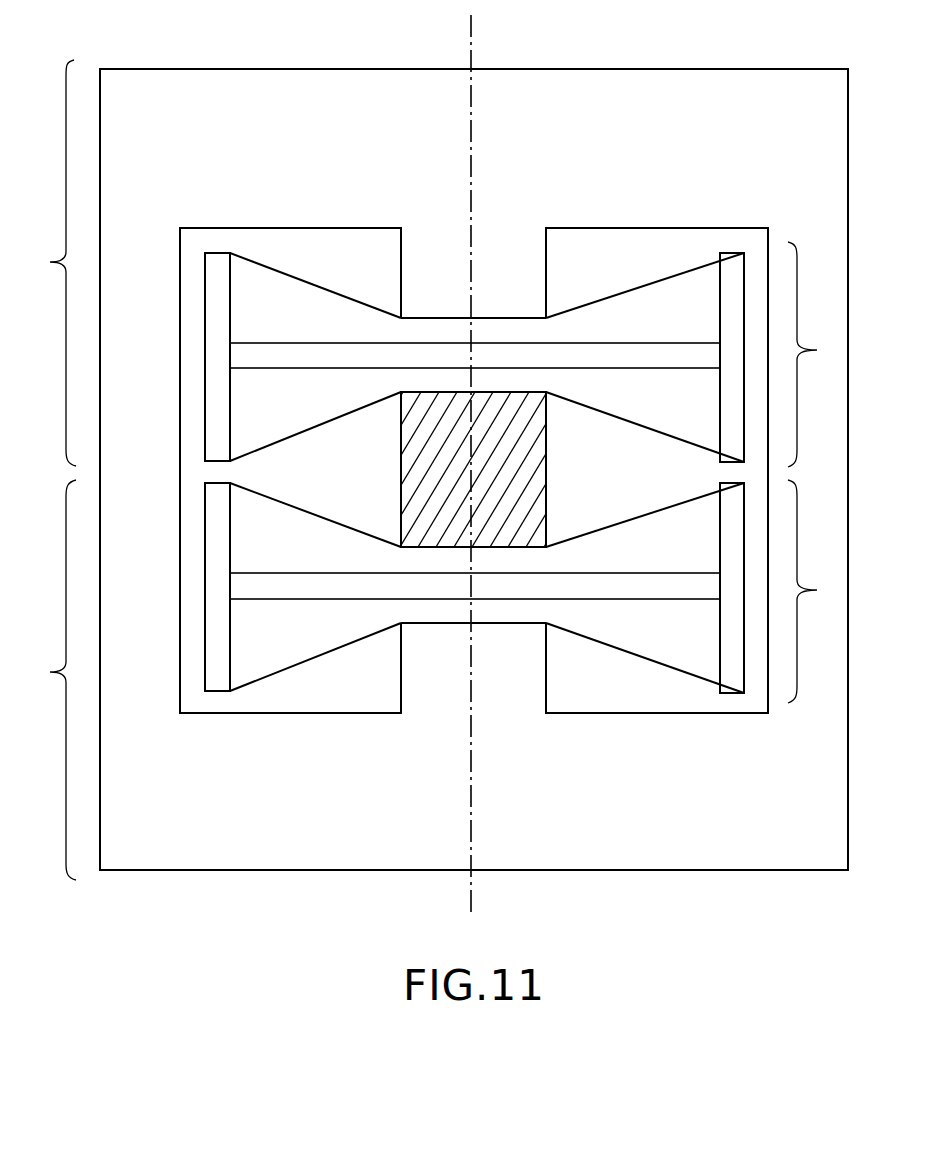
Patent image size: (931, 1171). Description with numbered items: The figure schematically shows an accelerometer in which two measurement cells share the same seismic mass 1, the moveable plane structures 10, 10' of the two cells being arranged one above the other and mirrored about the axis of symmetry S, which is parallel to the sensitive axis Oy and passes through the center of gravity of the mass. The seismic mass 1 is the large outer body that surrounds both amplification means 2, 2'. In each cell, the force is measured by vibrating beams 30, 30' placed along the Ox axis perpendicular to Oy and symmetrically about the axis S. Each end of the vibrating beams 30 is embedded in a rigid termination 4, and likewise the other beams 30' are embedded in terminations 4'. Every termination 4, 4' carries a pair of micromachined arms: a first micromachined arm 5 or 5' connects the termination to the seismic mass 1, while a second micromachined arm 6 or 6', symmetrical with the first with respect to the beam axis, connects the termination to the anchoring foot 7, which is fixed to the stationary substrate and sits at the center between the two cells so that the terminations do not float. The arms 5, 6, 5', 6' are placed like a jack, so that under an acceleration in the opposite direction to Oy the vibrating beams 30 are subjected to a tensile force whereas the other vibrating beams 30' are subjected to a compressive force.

The seismic mass 1 is at (258, 92).
The axis of symmetry S is at (480, 460).
The moveable plane structure 10 is at (48, 263).
The moveable plane structure 10' is at (47, 680).
The amplification means 2 is at (506, 470).
The amplification means 2' is at (813, 591).
The rigid termination 4 is at (471, 357).
The rigid termination 4' is at (469, 588).
The first micromachined arm 5 is at (487, 284).
The first micromachined arm 5' is at (487, 515).
The second micromachined arm 6 is at (487, 428).
The second micromachined arm 6' is at (487, 658).
The anchoring foot 7 is at (527, 474).
The vibrating beams 30 is at (475, 371).
The vibrating beams 30' is at (475, 603).